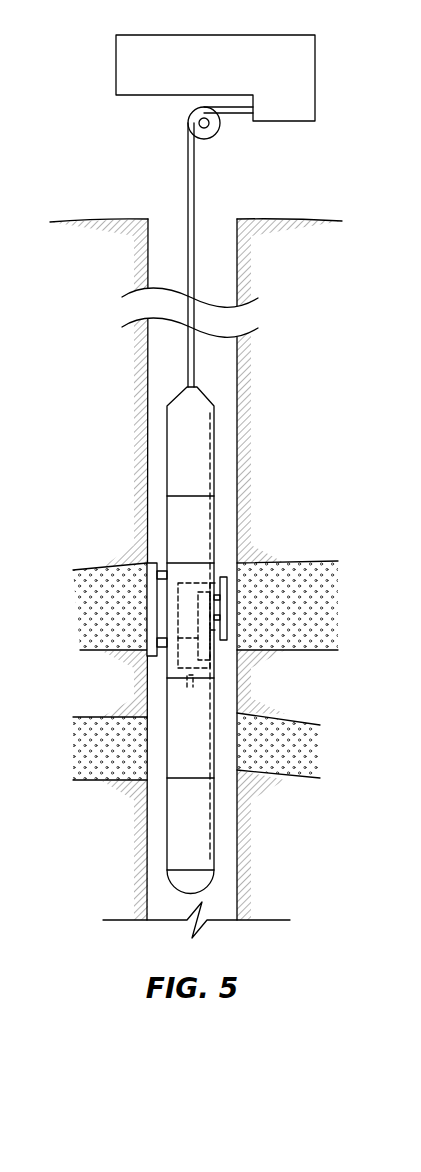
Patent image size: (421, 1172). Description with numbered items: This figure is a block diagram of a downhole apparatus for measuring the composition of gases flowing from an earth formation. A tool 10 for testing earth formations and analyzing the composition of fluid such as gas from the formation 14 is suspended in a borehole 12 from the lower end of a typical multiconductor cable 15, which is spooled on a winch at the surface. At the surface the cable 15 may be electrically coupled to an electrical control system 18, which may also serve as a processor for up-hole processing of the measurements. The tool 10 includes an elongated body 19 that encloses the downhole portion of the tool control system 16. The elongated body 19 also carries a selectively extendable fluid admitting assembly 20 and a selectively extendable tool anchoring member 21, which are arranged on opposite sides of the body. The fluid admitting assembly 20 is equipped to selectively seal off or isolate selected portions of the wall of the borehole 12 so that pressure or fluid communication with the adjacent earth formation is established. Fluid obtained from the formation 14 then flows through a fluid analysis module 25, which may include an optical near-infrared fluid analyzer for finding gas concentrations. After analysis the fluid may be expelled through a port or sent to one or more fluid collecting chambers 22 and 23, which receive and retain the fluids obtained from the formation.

The tool 10 is at (222, 518).
The borehole 12 is at (233, 257).
The formation 14 is at (309, 612).
The multiconductor cable 15 is at (188, 172).
The tool control system 16 is at (204, 542).
The electrical control system 18 is at (285, 121).
The elongated body 19 is at (200, 450).
The fluid admitting assembly 20 is at (227, 583).
The tool anchoring member 21 is at (152, 620).
The fluid collecting chamber 22 is at (205, 740).
The fluid collecting chamber 23 is at (205, 836).
The fluid analysis module 25 is at (207, 660).